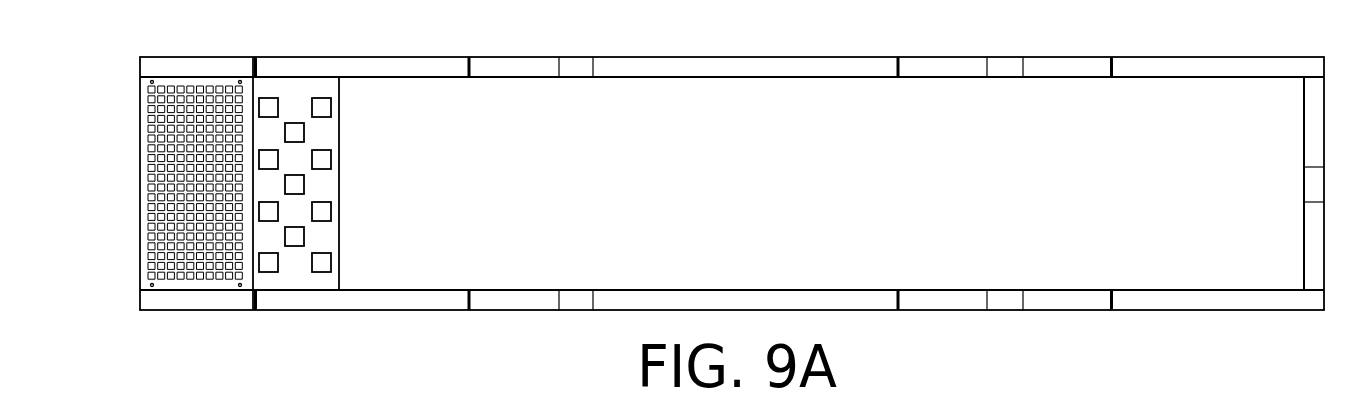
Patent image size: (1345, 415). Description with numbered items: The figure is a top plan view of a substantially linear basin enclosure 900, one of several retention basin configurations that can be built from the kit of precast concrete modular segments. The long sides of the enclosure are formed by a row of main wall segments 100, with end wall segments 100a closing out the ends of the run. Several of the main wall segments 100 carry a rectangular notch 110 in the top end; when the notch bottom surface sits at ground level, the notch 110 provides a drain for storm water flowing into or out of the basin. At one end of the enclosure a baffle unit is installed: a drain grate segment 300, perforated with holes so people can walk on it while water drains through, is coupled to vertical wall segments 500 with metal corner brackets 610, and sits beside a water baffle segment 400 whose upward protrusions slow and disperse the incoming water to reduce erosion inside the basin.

The substantially linear basin enclosure 900 is at (433, 50).
The main wall segment 100 is at (552, 57).
The end solar panel module 100a is at (367, 57).
The rectangular notch 110 is at (580, 78).
The drain grate segment 300 is at (138, 178).
The water baffle segment 400 is at (340, 182).
The vertical wall segment 500 is at (208, 57).
The metal corner bracket 610 is at (365, 140).